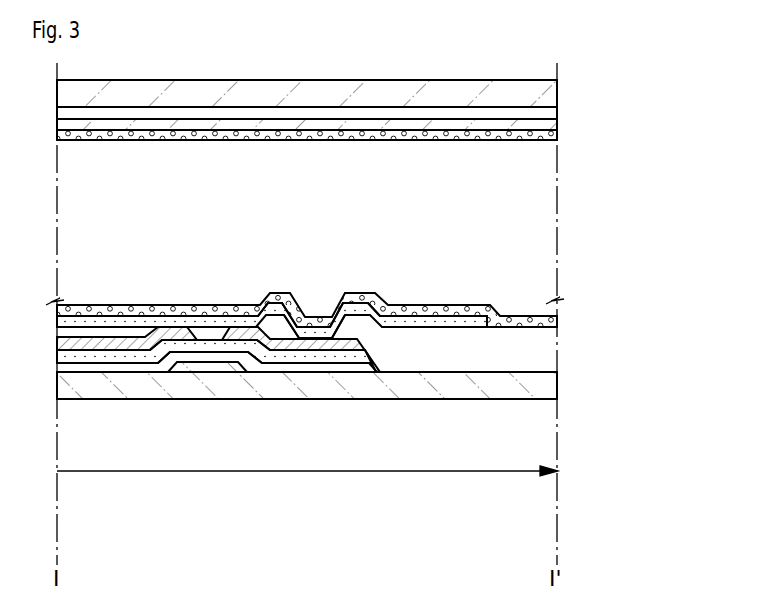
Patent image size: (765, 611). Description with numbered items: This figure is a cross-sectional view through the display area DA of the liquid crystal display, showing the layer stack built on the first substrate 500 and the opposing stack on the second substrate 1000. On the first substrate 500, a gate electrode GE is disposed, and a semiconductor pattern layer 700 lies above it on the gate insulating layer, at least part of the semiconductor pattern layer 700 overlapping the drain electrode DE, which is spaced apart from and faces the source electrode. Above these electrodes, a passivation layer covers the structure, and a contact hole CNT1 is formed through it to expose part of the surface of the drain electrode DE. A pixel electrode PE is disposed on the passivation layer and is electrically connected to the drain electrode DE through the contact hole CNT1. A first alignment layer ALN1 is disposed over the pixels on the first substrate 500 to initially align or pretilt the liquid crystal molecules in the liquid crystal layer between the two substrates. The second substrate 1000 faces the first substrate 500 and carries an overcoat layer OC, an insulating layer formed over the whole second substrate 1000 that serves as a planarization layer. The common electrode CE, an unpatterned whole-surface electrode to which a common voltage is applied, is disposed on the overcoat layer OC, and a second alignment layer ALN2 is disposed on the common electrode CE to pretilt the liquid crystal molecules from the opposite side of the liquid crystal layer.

The second substrate 1000 is at (555, 84).
The overcoat layer OC is at (555, 113).
The common electrode CE is at (555, 127).
The second alignment layer ALN2 is at (555, 138).
The contact hole CNT1 is at (305, 334).
The pixel electrode PE is at (478, 323).
The first alignment layer ALN1 is at (557, 322).
The gate electrode GE is at (208, 372).
The semiconductor pattern layer 700 is at (311, 357).
The drain electrode DE is at (350, 347).
The first substrate 500 is at (422, 385).
The display area DA is at (307, 484).